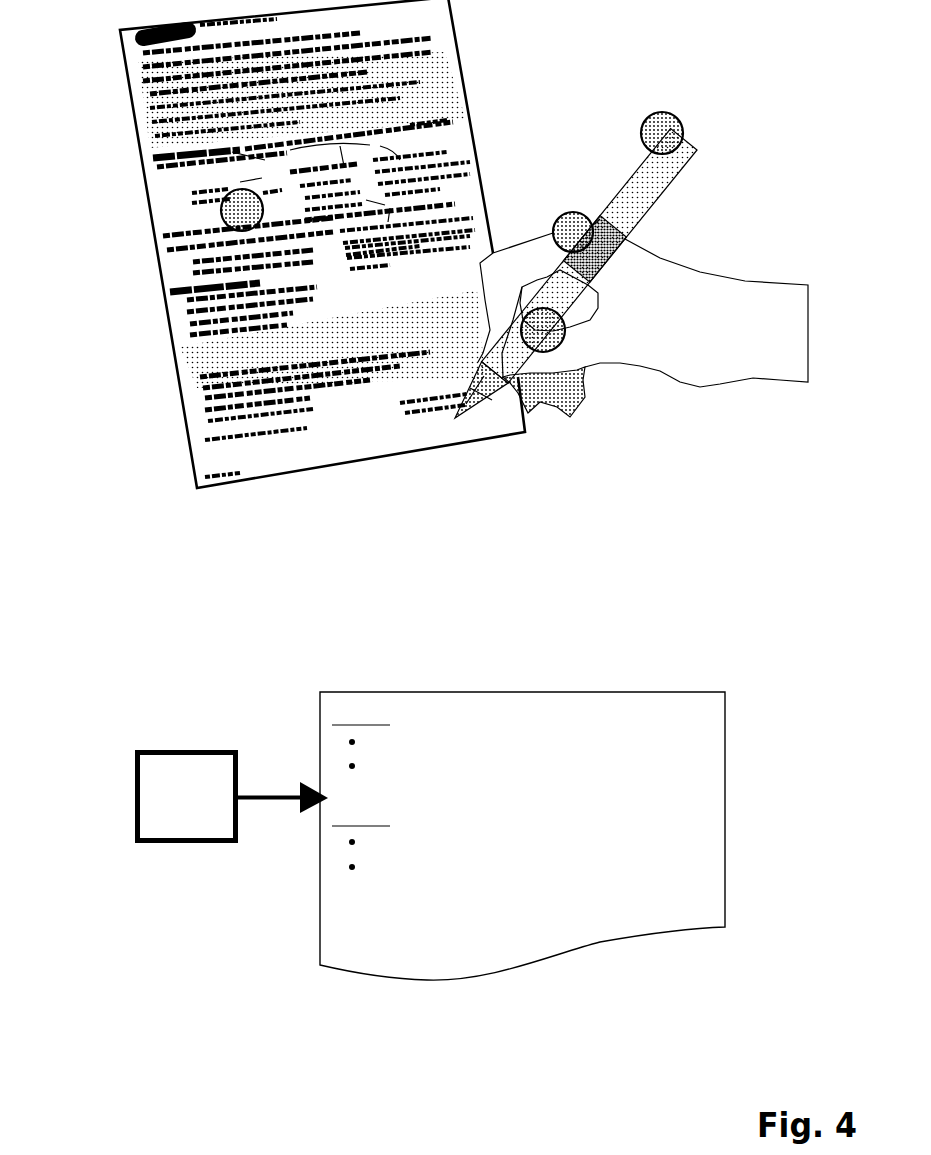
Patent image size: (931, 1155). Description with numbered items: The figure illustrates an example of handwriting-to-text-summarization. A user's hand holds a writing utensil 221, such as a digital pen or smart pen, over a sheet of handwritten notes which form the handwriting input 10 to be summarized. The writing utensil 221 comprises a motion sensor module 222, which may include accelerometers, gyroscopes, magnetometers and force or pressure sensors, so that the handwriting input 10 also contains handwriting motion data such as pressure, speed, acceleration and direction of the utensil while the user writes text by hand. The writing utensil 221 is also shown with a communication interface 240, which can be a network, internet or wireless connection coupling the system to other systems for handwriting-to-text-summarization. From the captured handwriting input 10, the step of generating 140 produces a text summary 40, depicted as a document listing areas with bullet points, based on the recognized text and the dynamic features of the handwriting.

The handwriting input 10 is at (242, 210).
The text summary 40 is at (527, 692).
The generating a text summary 140 is at (213, 814).
The writing utensil 221 is at (543, 337).
The motion sensor module 222 is at (575, 232).
The communication interface 240 is at (743, 90).